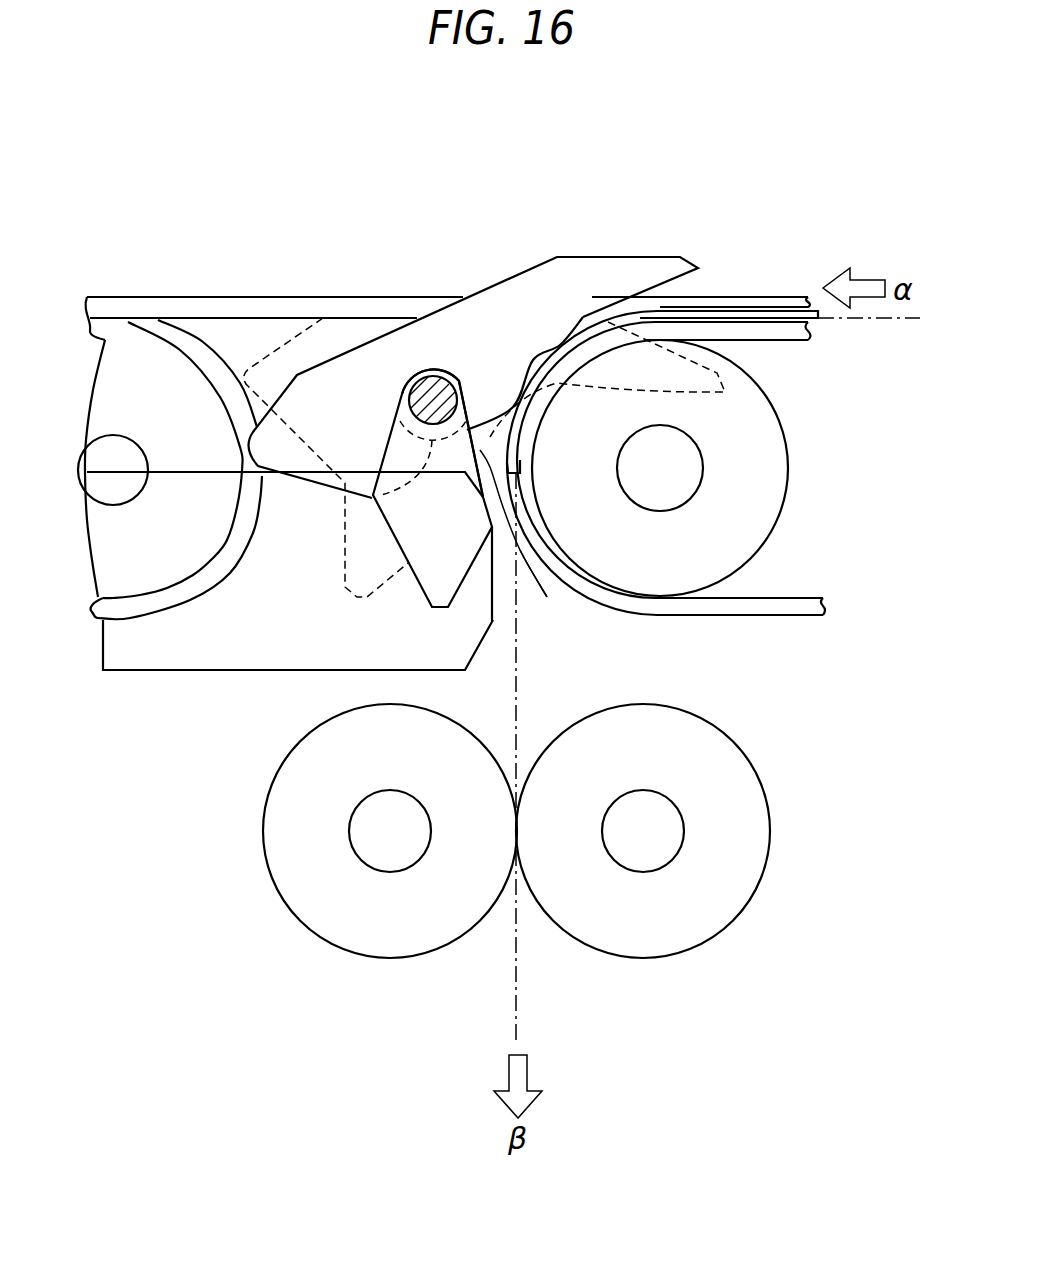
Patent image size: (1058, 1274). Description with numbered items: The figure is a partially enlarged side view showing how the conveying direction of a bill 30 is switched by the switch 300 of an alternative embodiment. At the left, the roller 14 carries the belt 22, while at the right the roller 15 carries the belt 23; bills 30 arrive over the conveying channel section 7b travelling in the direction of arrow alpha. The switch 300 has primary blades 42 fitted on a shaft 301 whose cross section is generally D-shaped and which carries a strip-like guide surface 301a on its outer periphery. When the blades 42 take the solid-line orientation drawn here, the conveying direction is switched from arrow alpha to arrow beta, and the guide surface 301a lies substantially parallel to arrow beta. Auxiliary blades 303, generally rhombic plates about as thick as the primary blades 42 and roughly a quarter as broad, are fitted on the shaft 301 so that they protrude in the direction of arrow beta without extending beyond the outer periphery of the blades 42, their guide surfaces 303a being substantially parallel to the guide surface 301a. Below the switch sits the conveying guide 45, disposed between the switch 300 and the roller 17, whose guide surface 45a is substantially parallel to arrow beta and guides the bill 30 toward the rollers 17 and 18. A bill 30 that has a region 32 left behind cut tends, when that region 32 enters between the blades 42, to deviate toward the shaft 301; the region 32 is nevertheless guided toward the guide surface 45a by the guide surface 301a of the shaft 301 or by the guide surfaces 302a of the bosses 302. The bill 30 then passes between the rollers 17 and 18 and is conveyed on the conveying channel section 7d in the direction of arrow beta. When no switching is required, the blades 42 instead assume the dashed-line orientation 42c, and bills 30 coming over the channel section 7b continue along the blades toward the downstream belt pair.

The roller 14 is at (130, 355).
The belt 22 is at (183, 350).
The blades 42 is at (662, 256).
The dashed line orientation of blades 42c is at (343, 563).
The switch 300 is at (595, 250).
The shaft 301 is at (415, 380).
The guide surface 301a is at (465, 390).
The bosses 302 is at (370, 497).
The guide surfaces 302a is at (478, 398).
The auxiliary blades 303 is at (387, 445).
The guide surfaces 303a is at (547, 597).
The region 32 is at (510, 375).
The bill 30 is at (773, 315).
The conveying channel section 7b is at (903, 320).
The roller 15 is at (737, 558).
The belt 23 is at (707, 614).
The conveying guide 45 is at (156, 668).
The guide surface 45a is at (495, 610).
The conveying channel section 7d is at (520, 1016).
The roller 17 is at (383, 958).
The roller 18 is at (645, 958).